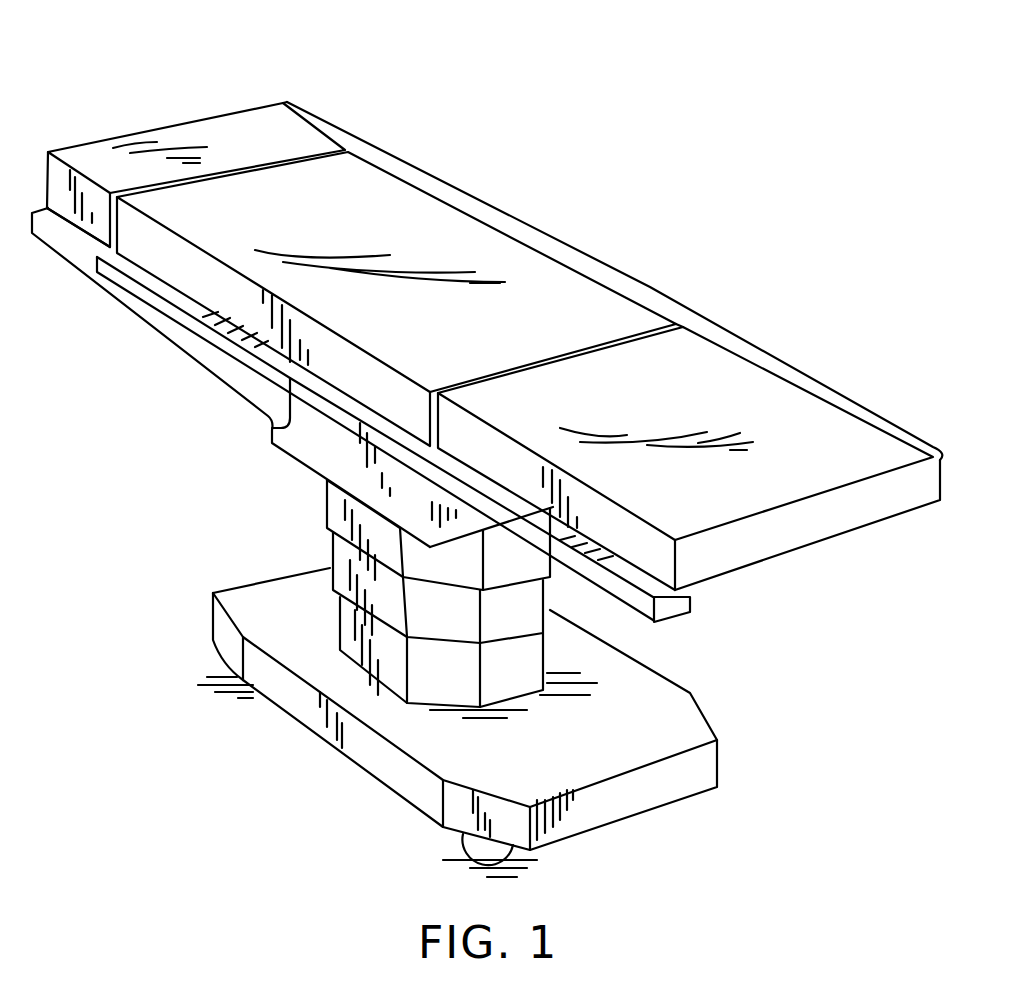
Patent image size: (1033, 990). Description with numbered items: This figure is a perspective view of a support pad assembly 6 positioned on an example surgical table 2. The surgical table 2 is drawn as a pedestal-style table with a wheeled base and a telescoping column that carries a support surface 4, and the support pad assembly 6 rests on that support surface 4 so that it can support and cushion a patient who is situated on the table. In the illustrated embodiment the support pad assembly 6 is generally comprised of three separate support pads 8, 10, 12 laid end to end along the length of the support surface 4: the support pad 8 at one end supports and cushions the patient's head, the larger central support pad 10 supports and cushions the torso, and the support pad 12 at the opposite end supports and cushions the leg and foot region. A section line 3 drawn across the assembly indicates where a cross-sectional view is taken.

The surgical table 2 is at (474, 92).
The section line 3- 3 is at (205, 302).
The support surface 4 is at (239, 405).
The support pad assembly 6 is at (650, 287).
The support pad 8 is at (213, 136).
The support pad 10 is at (454, 225).
The support pad 12 is at (796, 421).